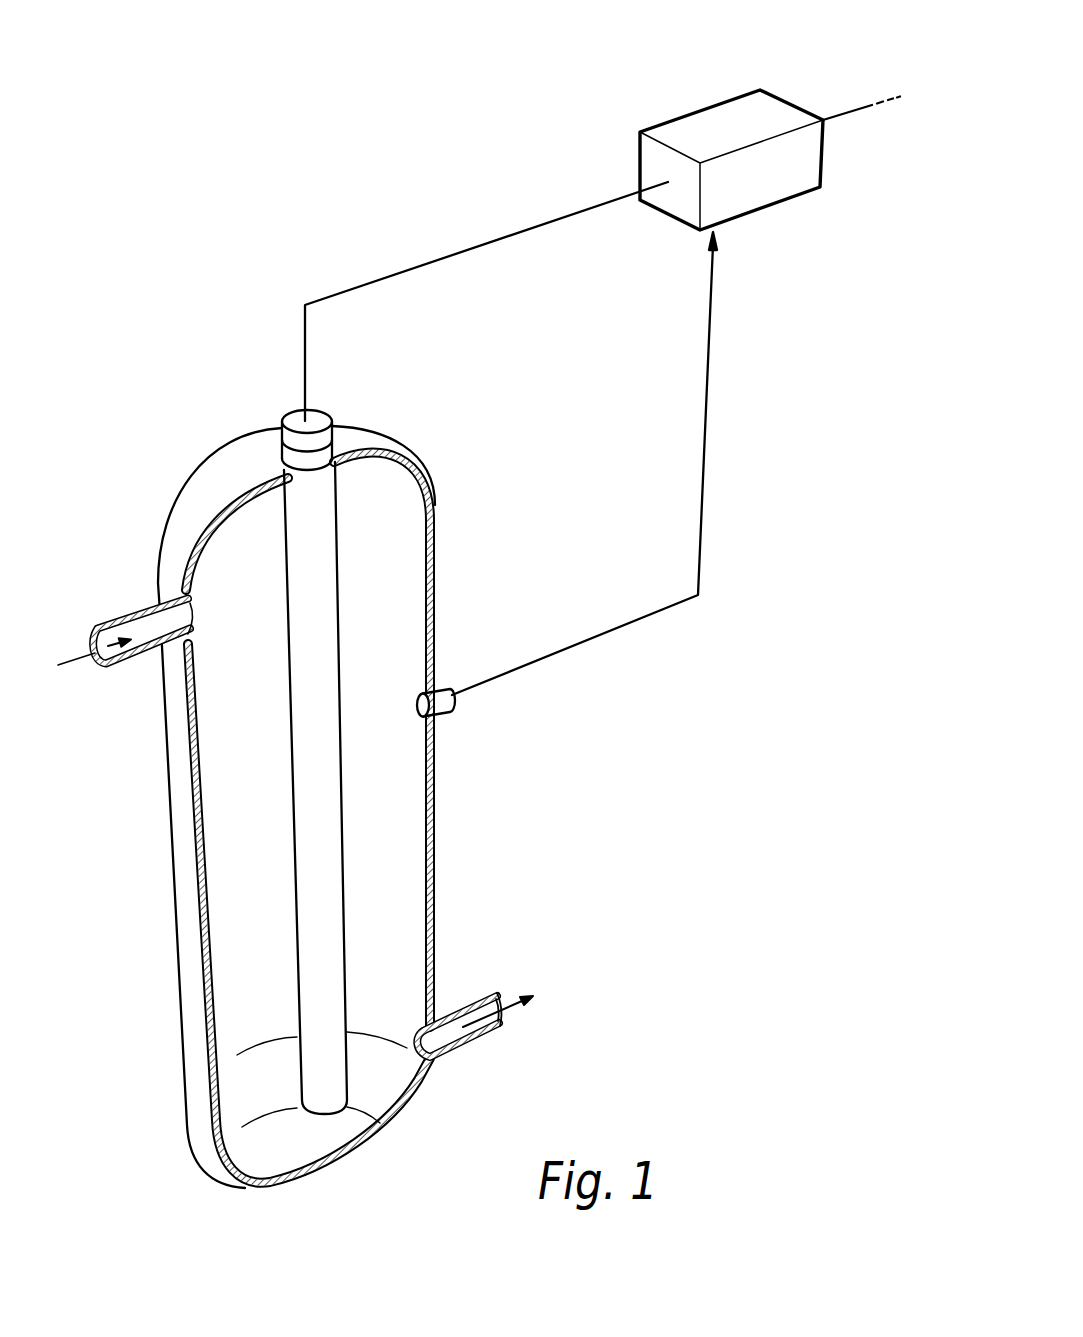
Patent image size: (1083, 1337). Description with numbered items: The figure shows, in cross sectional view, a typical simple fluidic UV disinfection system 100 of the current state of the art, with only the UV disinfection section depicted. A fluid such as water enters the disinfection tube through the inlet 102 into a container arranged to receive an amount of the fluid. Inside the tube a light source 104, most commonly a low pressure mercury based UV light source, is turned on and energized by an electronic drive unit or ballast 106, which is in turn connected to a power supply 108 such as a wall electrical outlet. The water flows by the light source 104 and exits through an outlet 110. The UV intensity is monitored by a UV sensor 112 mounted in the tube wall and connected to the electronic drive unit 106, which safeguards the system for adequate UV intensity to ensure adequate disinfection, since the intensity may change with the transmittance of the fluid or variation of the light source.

The fluidic UV disinfection system 100 is at (194, 268).
The inlet 102 is at (79, 660).
The light source 104 is at (328, 902).
The electronic drive unit (ballast) 106 is at (727, 128).
The power supply 108 is at (848, 120).
The outlet 110 is at (483, 1035).
The UV sensor 112 is at (443, 707).